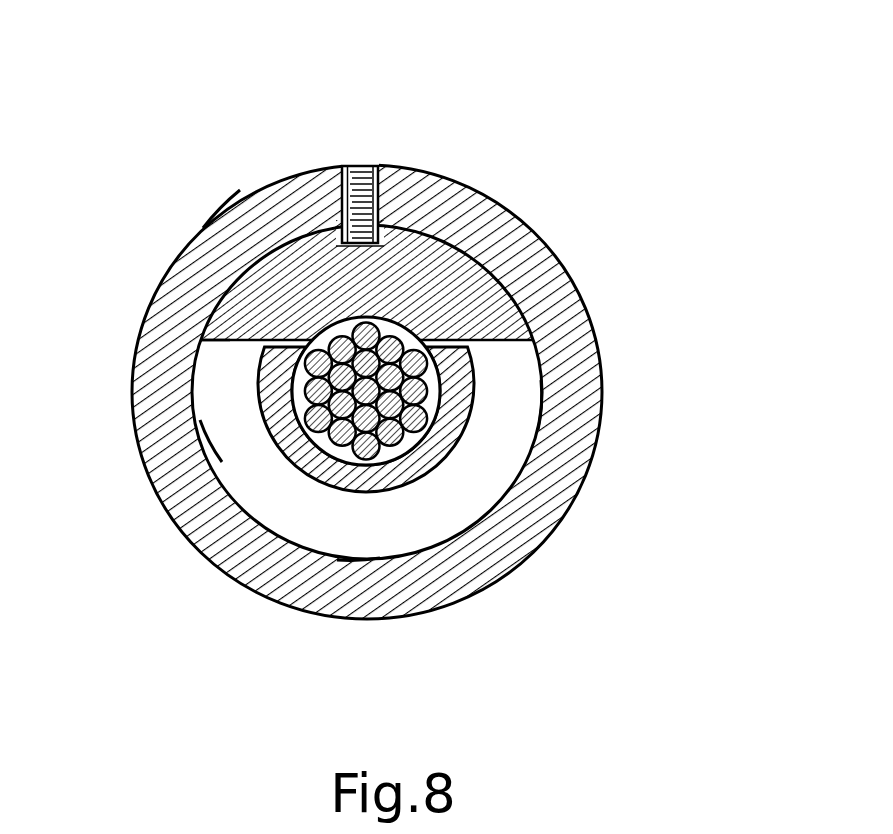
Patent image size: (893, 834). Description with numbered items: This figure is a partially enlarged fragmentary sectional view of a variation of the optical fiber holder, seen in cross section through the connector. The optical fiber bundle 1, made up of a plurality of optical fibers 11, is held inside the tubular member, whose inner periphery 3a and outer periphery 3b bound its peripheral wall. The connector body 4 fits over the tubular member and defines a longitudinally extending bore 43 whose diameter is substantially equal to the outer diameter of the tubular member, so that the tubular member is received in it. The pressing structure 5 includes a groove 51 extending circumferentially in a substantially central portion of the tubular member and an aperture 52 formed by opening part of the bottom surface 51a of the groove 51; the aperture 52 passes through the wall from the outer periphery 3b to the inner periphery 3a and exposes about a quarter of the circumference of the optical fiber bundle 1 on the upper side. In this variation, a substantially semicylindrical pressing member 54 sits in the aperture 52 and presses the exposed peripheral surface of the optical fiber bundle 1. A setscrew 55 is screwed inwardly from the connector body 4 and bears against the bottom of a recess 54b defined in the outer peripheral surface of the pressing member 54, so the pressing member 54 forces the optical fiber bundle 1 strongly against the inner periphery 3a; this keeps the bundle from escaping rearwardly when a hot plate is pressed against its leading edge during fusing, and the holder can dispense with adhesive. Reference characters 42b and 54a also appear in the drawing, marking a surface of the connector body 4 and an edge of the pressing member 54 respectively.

The optical fiber bundle 1 is at (413, 452).
The inner periphery 3a is at (308, 472).
The outer periphery 3b is at (337, 562).
The connector body 4 is at (434, 160).
The pressing structure 5 is at (537, 297).
The optical fibers 11 is at (300, 397).
The housing wall 42b is at (203, 228).
The bore 43 is at (226, 462).
The groove 51 is at (510, 472).
The bottom surface 51a is at (480, 398).
The aperture 52 is at (303, 335).
The pressing member 54 is at (433, 228).
The clamping edge 54a is at (232, 343).
The recess 54b is at (338, 225).
The setscrew 55 is at (366, 158).